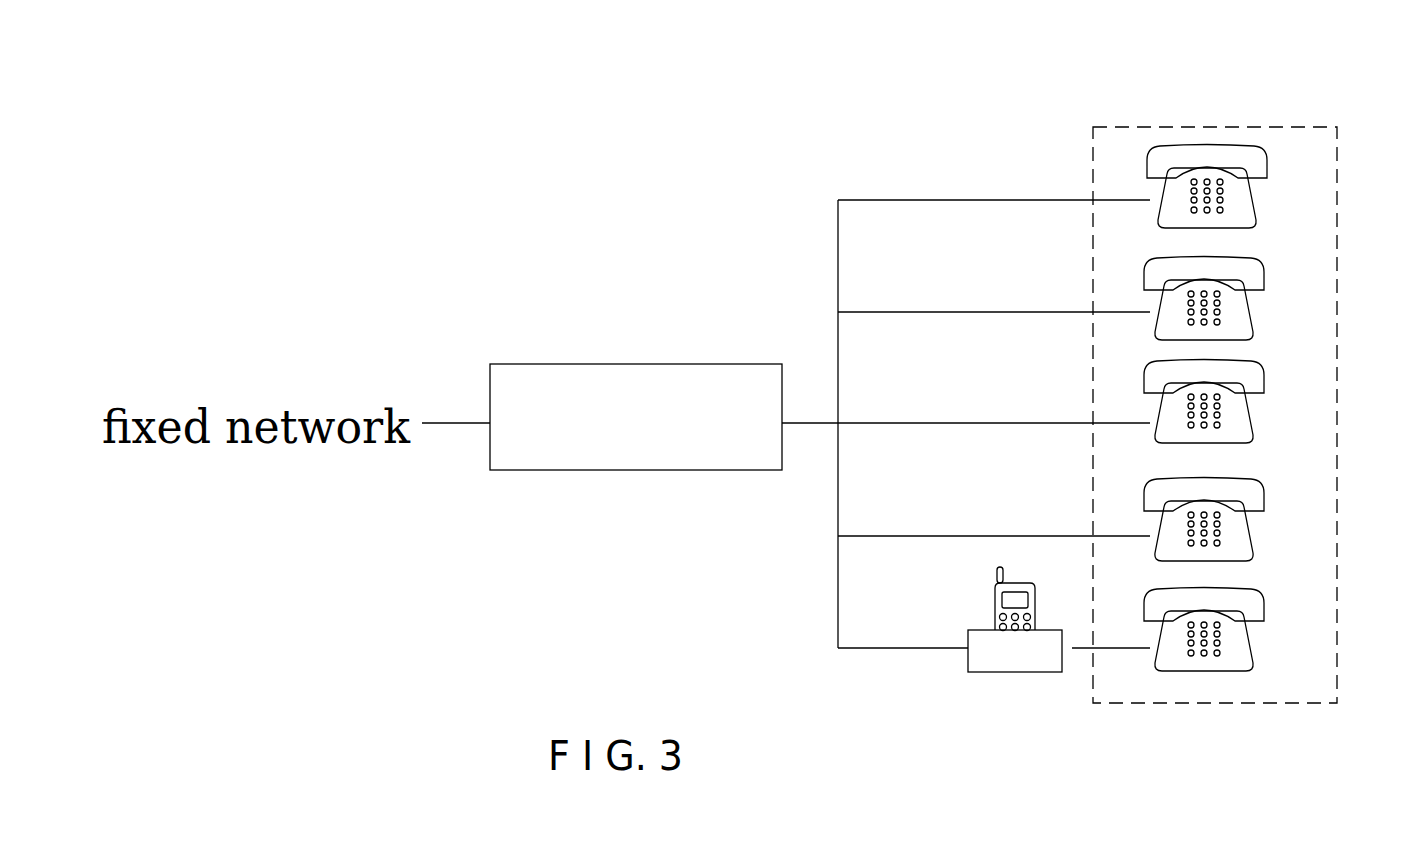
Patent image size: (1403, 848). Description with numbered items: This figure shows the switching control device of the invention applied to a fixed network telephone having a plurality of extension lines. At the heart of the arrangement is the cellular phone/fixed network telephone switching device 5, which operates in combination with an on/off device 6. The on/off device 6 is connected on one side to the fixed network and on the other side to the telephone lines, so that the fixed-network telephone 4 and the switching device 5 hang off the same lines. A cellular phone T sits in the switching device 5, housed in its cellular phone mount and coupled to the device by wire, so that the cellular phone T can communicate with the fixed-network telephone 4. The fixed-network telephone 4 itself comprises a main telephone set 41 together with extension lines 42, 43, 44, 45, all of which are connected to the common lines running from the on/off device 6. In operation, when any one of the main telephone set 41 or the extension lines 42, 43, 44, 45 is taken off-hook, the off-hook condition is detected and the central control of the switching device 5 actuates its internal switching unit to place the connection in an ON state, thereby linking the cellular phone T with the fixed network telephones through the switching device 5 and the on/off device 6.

The fixed-network telephone 4 is at (1347, 163).
The main telephone set 41 is at (1245, 638).
The extension line 42 is at (1245, 533).
The extension line 43 is at (1245, 413).
The extension line 44 is at (1245, 311).
The extension line 45 is at (1251, 199).
The cellular phone/fixed network telephone switching device 5 is at (978, 630).
The on/off device 6 is at (636, 364).
The cellular phone T is at (1038, 610).